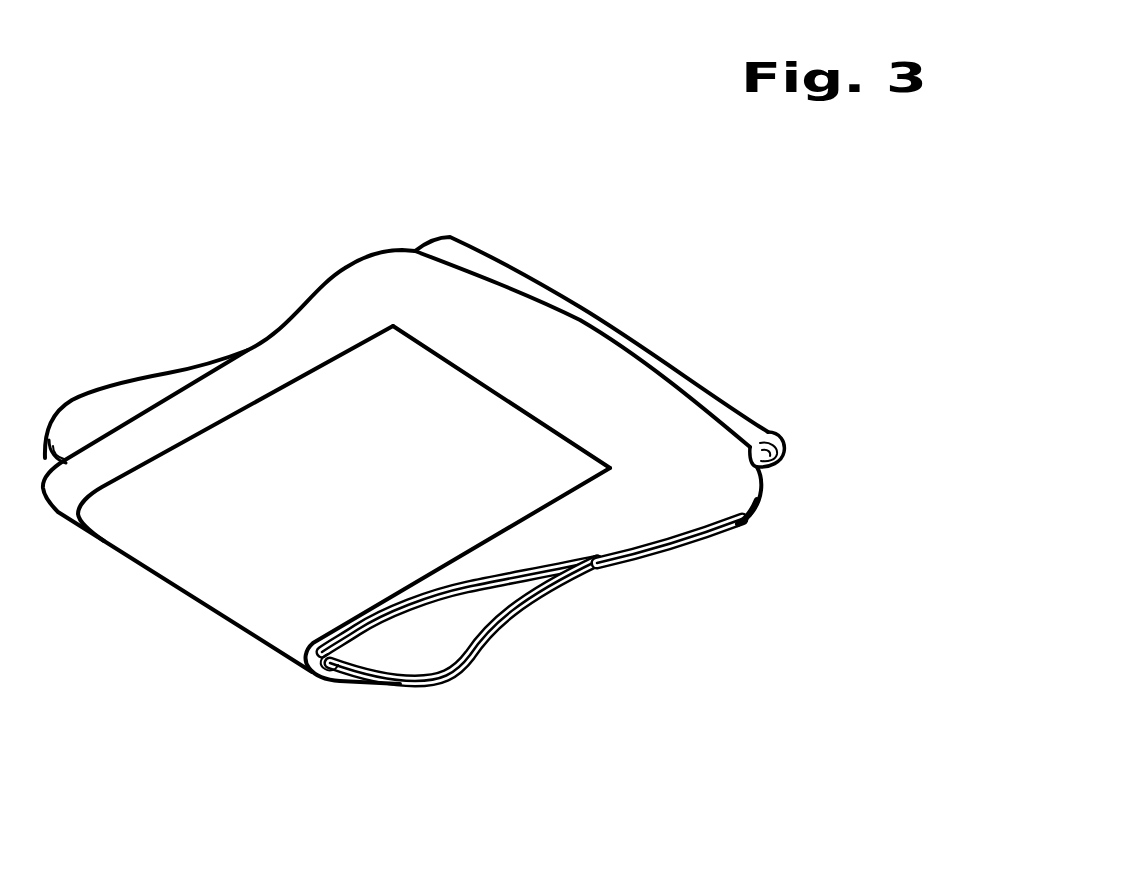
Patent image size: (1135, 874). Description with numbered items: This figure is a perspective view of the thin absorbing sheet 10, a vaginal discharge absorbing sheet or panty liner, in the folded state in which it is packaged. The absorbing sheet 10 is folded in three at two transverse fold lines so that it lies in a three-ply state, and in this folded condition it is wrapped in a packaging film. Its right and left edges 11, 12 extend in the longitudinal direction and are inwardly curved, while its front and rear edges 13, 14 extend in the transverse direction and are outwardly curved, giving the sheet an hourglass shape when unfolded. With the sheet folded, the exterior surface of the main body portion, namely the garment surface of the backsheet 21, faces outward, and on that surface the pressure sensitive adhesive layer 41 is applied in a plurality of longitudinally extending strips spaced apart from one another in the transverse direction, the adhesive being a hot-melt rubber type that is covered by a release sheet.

The absorbing sheet 10 is at (569, 277).
The right edge 11 is at (553, 604).
The left edge 12 is at (219, 356).
The front edge 13 is at (374, 678).
The rear edge 14 is at (622, 338).
The backsheet 21 is at (655, 510).
The pressure sensitive adhesive layer 41 is at (203, 565).